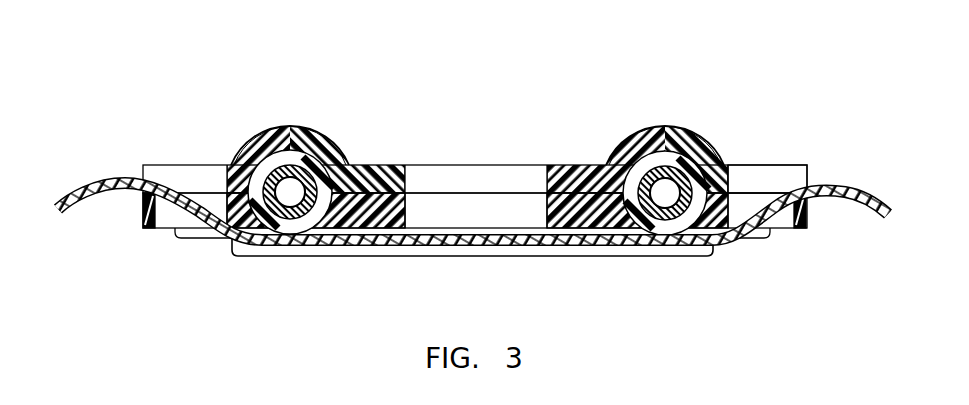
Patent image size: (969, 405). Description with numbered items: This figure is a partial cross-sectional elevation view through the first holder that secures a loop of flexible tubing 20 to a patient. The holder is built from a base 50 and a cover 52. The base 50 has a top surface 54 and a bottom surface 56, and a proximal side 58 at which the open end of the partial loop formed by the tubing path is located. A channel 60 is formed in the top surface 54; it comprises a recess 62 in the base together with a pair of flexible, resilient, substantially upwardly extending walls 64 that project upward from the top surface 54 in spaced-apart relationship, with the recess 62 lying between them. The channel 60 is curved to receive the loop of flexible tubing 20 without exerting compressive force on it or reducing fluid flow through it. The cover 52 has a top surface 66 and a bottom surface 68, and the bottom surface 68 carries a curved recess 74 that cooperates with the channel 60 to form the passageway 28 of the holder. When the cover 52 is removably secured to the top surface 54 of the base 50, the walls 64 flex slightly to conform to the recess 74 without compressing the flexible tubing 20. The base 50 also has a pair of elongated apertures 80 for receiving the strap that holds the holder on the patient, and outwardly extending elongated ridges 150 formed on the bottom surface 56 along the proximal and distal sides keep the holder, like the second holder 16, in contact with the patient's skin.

The second holder 16 is at (190, 72).
The passageway 28 is at (311, 84).
The recess 74 is at (286, 157).
The substantially upwardly extending walls 64 is at (243, 155).
The recess 62 is at (282, 226).
The channel 60 is at (328, 232).
The top surface 54 is at (140, 196).
The bottom surface 56 is at (141, 234).
The elongated apertures 80 is at (173, 222).
The ridges 150 is at (690, 257).
The cover 52 is at (672, 119).
The proximal side 58 is at (660, 160).
The flexible tubing 20 is at (640, 165).
The top surface 66 is at (700, 142).
The bottom surface 68 is at (742, 195).
The base 50 is at (816, 234).